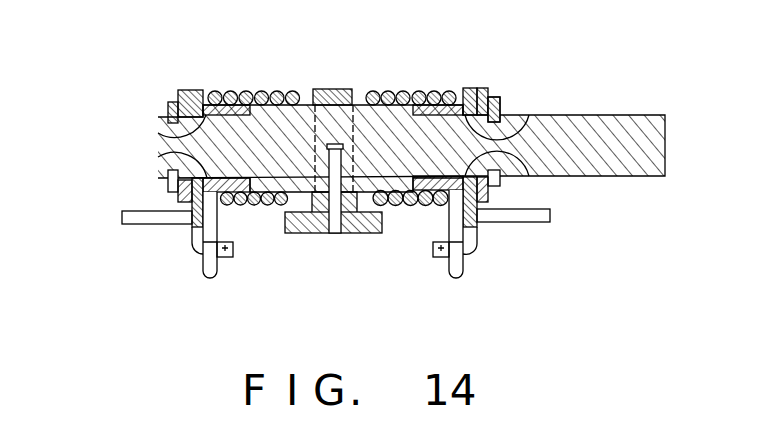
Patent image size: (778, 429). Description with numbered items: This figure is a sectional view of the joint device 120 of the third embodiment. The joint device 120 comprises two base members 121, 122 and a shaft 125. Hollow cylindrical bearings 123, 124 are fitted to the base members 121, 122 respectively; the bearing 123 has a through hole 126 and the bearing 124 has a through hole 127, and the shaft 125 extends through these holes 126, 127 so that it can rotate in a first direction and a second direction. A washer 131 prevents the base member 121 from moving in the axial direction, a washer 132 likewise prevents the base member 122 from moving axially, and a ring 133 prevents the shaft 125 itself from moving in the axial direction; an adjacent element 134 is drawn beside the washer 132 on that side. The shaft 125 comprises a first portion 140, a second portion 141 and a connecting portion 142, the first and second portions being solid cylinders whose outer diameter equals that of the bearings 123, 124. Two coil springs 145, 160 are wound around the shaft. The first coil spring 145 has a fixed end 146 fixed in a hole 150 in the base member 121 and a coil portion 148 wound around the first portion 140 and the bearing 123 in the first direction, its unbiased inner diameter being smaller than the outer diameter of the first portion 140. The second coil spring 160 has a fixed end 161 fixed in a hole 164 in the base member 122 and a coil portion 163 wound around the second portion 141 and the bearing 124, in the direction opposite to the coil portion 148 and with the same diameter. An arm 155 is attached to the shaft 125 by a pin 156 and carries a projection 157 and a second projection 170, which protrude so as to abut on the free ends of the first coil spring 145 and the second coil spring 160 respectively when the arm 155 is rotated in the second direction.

The joint device 120 is at (104, 243).
The base member 121 is at (188, 232).
The base member 122 is at (478, 231).
The bearing 123 is at (158, 133).
The bearing 124 is at (528, 116).
The shaft 125 is at (311, 106).
The through hole 126 is at (158, 158).
The through hole 127 is at (506, 173).
The washer 131 is at (182, 91).
The washer 132 is at (500, 90).
The ring 133 is at (170, 108).
The side block 134 is at (512, 113).
The first portion 140 is at (275, 91).
The second portion 141 is at (387, 90).
The connecting portion 142 is at (647, 114).
The first coil spring 145 is at (222, 83).
The fixed end 146 is at (200, 268).
The coil portion 148 is at (240, 90).
The hole 150 is at (227, 258).
The arm 155 is at (338, 78).
The pin 156 is at (336, 234).
The projection 157 is at (280, 234).
The second coil spring 160 is at (418, 78).
The fixed end 161 is at (467, 266).
The coil portion 163 is at (435, 86).
The hole 164 is at (445, 255).
The second projection 170 is at (383, 228).